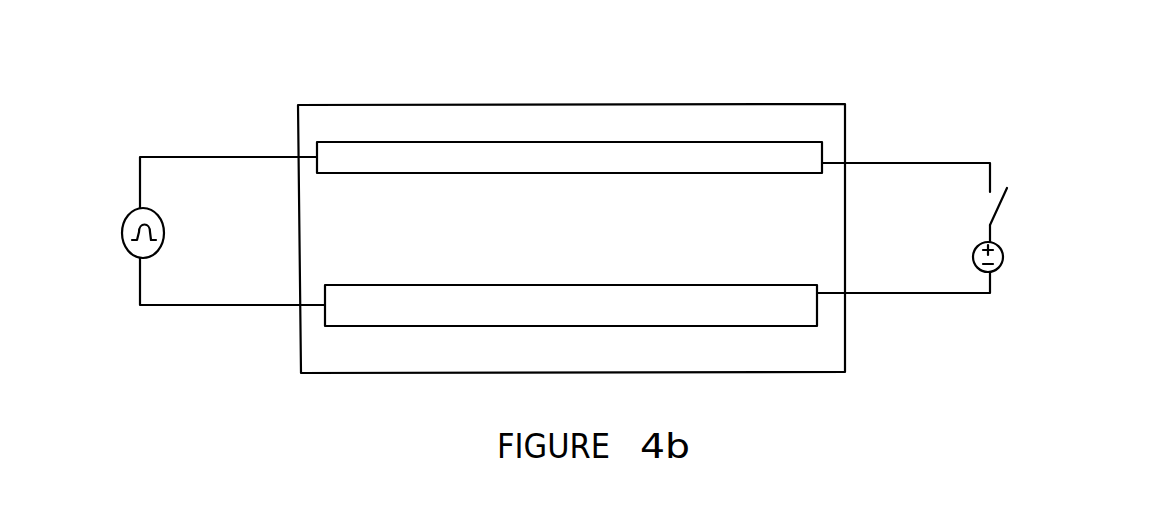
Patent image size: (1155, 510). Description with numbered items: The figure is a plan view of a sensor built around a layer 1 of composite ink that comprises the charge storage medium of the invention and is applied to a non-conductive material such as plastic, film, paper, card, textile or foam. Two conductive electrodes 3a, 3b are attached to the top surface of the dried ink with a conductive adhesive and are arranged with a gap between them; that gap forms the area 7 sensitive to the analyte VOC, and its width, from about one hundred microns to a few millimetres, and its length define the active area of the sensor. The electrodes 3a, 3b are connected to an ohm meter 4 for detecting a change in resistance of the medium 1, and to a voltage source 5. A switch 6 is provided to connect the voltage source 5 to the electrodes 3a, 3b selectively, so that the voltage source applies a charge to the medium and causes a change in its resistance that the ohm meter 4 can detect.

The layer of composite ink 1 is at (312, 118).
The conductive electrode 3a is at (808, 307).
The conductive electrode 3b is at (807, 158).
The ohm meter 4 is at (125, 253).
The voltage source 5 is at (1000, 267).
The switch 6 is at (1003, 207).
The area sensitive to the analyte VOC 7 is at (618, 215).